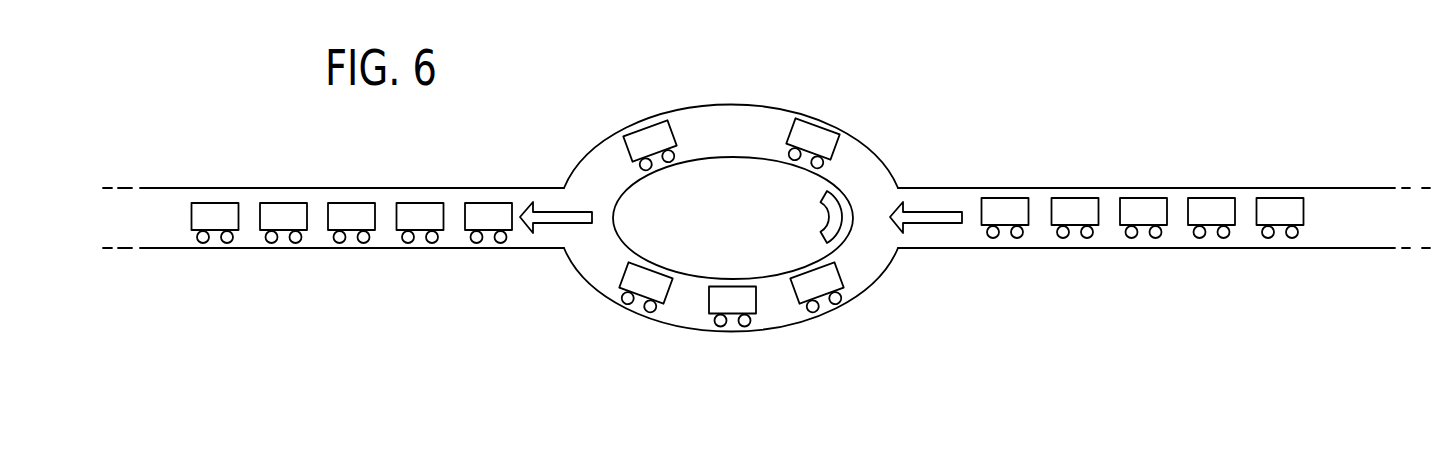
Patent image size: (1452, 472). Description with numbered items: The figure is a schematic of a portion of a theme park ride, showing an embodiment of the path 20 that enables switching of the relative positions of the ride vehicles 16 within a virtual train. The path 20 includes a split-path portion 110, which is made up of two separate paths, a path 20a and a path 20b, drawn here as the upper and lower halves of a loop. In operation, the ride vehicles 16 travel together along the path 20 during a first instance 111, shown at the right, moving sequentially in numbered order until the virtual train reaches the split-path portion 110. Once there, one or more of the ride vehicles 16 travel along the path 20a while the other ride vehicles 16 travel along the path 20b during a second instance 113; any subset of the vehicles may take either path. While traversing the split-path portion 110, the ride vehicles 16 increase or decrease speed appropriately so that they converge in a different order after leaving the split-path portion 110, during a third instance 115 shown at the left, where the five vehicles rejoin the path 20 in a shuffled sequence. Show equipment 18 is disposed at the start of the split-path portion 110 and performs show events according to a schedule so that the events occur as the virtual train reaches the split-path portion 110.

The ride vehicle 16 is at (351, 203).
The show equipment 18 is at (822, 213).
The path 20 is at (933, 249).
The path 20a is at (733, 105).
The path 20b is at (645, 315).
The split-path portion 110 is at (832, 332).
The first instance 111 is at (1106, 290).
The second instance 113 is at (732, 348).
The third instance 115 is at (359, 289).